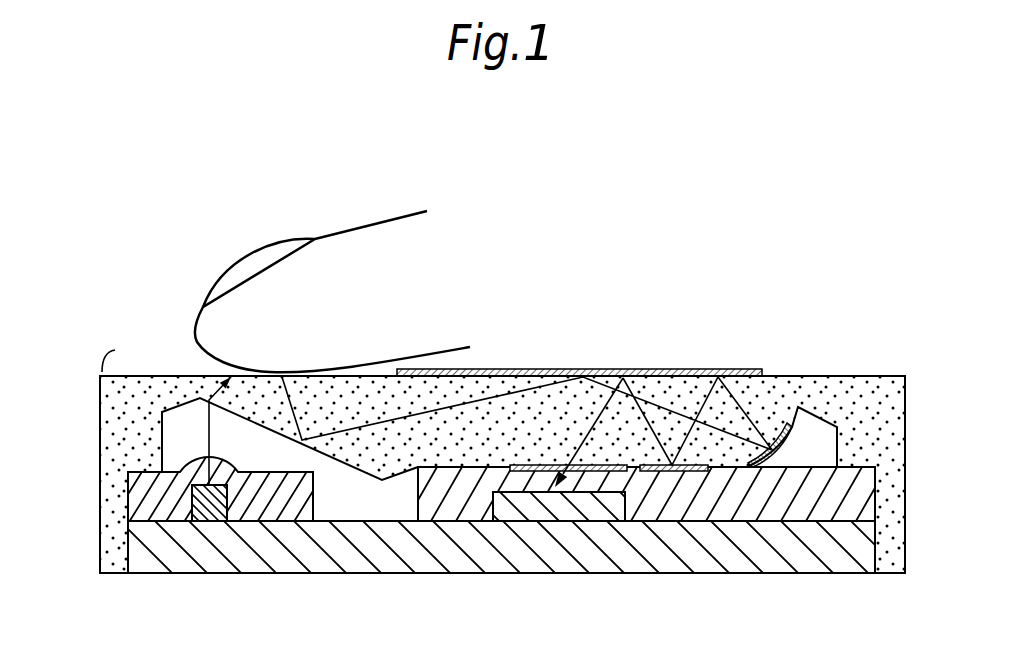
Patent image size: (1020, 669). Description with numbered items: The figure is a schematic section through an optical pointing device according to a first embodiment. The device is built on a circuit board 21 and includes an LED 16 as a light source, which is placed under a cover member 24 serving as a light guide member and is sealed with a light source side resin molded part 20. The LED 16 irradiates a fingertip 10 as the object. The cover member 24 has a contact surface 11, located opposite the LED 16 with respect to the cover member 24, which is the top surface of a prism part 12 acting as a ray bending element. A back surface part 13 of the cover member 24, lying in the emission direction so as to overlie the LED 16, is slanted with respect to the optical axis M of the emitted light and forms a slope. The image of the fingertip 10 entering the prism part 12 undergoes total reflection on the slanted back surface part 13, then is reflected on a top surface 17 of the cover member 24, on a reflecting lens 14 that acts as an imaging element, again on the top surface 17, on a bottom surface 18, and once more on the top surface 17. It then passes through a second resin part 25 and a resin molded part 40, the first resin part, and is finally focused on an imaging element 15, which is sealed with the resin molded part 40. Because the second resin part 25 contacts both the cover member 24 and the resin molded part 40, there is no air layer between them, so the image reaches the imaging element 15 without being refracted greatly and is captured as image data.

The fingertip 10 is at (250, 300).
The contact surface 11 is at (250, 371).
The prism part 12 is at (253, 405).
The back surface part 13 is at (285, 438).
The reflecting lens 14 is at (787, 425).
The imaging element 15 is at (567, 515).
The LED 16 is at (200, 512).
The top surface 17 is at (682, 370).
The bottom surface 18 is at (687, 468).
The light source side resin molded part 20 is at (312, 507).
The circuit board 21 is at (457, 572).
The cover member 24 is at (858, 393).
The second resin part 25 is at (590, 468).
The resin molded part 40 is at (753, 502).
The optical axis M is at (205, 438).